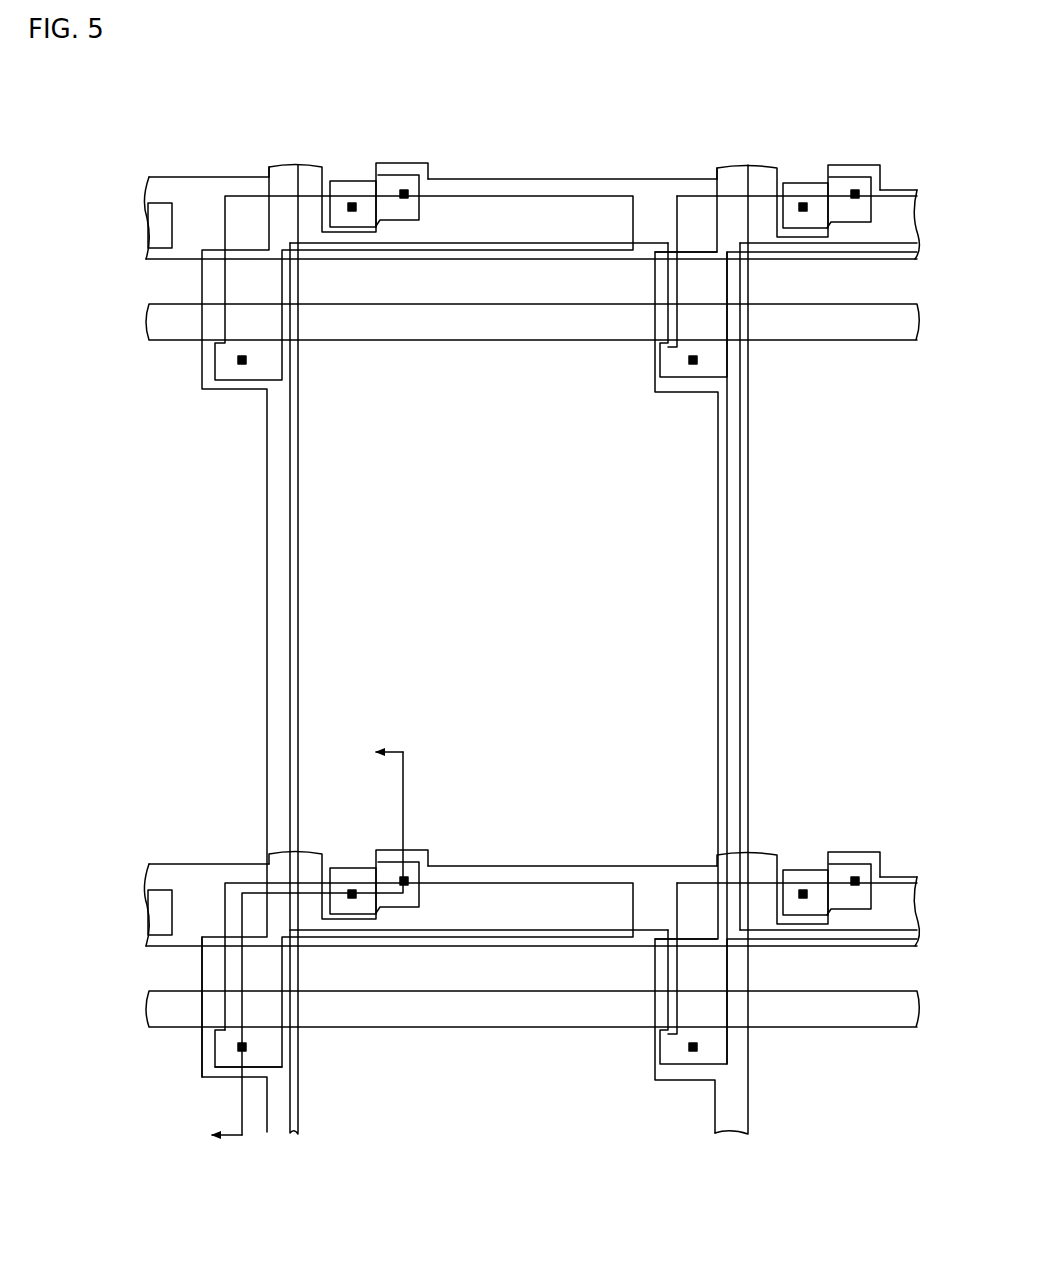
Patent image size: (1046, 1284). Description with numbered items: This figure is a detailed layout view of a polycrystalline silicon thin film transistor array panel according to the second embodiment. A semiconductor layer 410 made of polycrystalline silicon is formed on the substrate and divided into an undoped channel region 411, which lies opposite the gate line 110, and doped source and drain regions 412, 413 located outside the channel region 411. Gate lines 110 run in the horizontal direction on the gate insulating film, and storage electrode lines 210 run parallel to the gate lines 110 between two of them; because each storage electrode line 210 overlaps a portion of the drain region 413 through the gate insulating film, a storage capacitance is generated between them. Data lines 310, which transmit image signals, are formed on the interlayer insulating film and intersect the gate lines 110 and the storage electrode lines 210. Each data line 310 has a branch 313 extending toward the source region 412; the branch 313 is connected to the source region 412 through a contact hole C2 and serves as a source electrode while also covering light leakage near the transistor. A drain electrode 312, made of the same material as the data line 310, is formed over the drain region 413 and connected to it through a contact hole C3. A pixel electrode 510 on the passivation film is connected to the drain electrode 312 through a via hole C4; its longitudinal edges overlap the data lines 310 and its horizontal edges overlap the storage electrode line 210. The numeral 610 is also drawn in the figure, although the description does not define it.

The gate line 110 is at (857, 341).
The storage electrode line 210 is at (895, 186).
The data line 310 is at (292, 1110).
The drain electrode 312 is at (379, 856).
The branch 313 is at (204, 1002).
The semiconductor layer 410 is at (172, 970).
The channel region 411 is at (222, 1014).
The source region 412 is at (234, 1069).
The drain region 413 is at (334, 878).
The pixel electrode 510 is at (729, 592).
The storage electrode 610 is at (243, 1138).
The contact hole C2 is at (232, 1053).
The contact hole C3 is at (349, 884).
The via hole C4 is at (410, 876).